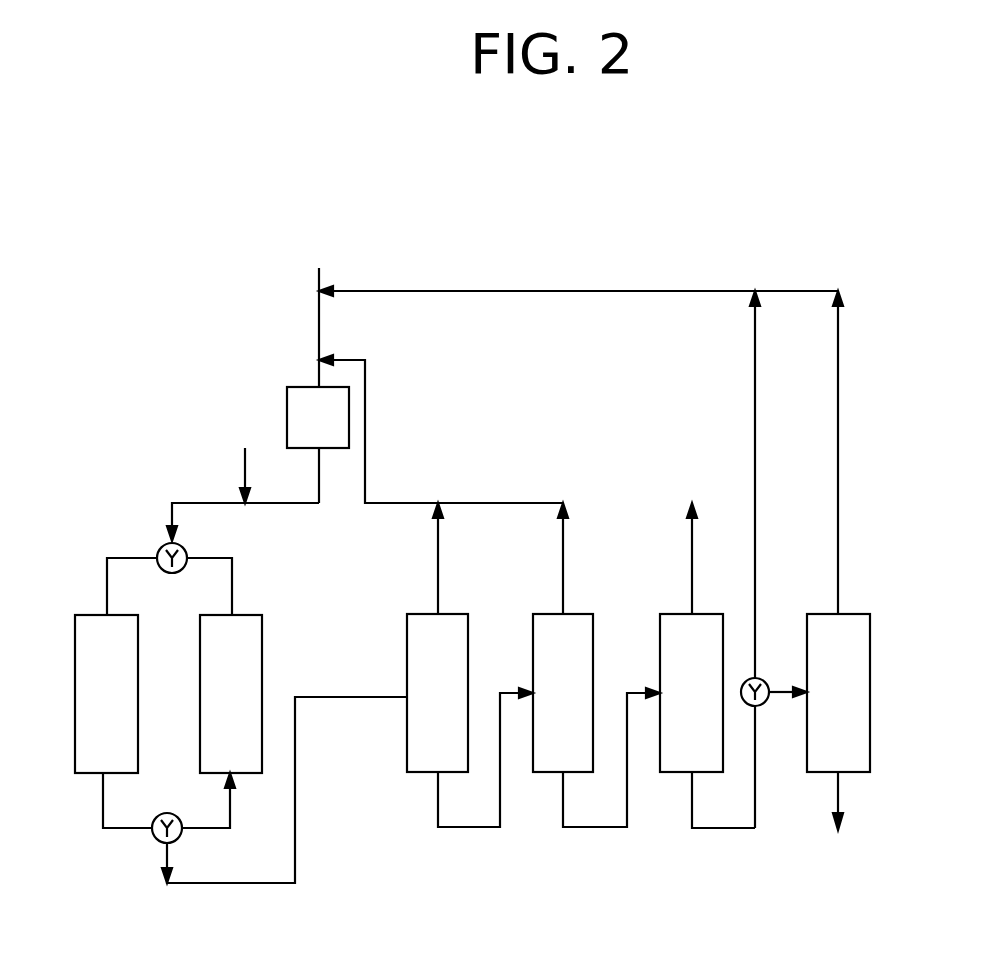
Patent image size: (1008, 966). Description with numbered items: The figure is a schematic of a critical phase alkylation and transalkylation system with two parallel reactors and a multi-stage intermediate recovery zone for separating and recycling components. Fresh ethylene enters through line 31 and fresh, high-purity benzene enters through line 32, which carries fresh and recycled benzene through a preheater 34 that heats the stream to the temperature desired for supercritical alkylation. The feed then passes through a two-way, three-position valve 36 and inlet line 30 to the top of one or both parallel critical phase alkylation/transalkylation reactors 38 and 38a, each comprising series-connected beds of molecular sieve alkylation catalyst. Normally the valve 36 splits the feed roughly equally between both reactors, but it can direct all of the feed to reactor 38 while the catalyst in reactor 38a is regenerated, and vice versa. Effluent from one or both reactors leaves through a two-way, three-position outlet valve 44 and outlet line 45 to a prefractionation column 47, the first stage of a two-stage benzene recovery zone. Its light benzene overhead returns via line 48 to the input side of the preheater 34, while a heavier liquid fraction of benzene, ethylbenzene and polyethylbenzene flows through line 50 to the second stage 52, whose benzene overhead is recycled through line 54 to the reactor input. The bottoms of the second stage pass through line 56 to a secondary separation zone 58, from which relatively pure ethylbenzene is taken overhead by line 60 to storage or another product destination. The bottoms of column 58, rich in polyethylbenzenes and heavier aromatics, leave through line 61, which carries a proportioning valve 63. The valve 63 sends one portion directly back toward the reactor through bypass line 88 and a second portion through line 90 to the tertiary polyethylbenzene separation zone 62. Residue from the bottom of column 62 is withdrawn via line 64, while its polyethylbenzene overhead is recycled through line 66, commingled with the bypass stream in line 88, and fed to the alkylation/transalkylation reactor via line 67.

The inlet line 30 is at (213, 503).
The line 31 is at (245, 463).
The line 32 is at (319, 328).
The preheater 34 is at (300, 387).
The two-way, three-position valve 36 is at (168, 575).
The critical phase alkylation/transalkylation reactor 38 is at (75, 656).
The critical phase alkylation/transalkylation reactor 38a is at (200, 680).
The two-way, three-position outlet valve 44 is at (162, 815).
The outlet line 45 is at (230, 883).
The prefractionation column 47 is at (407, 660).
The line 48 is at (438, 560).
The line 50 is at (448, 827).
The second stage of the benzene separation zone 52 is at (533, 643).
The line 54 is at (487, 503).
The line 56 is at (612, 827).
The secondary separation zone 58 is at (660, 652).
The line 60 is at (692, 553).
The line 61 is at (740, 828).
The tertiary polyethylbenzene separation zone 62 is at (848, 614).
The proportioning valve 63 is at (748, 706).
The line 64 is at (840, 792).
The line 66 is at (838, 385).
The line 67 is at (540, 291).
The line 88 is at (755, 535).
The line 90 is at (788, 692).